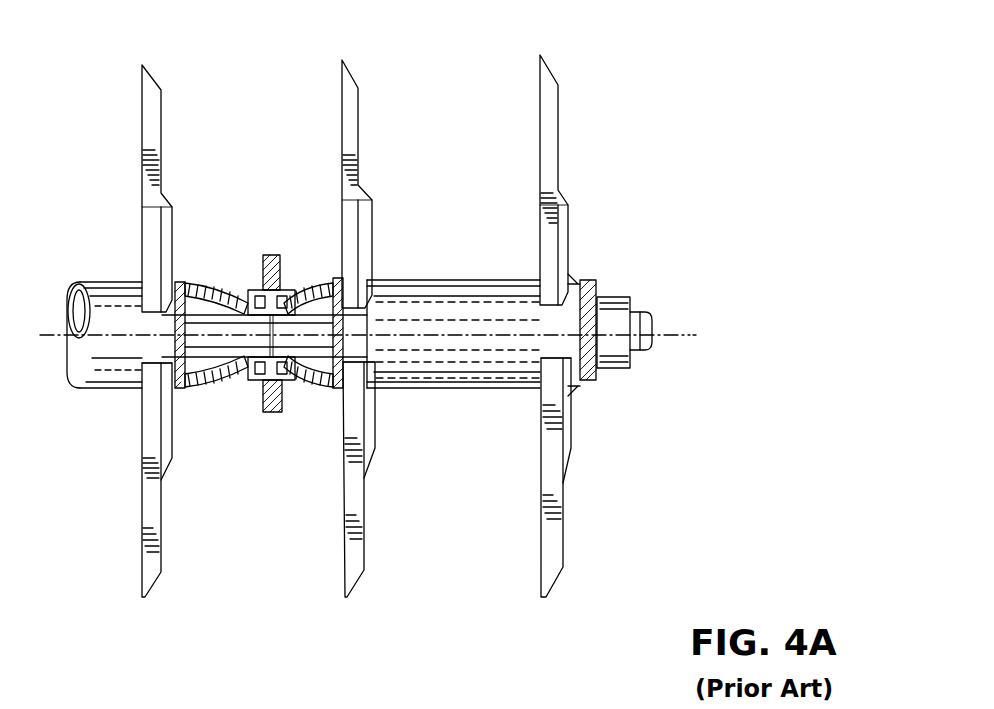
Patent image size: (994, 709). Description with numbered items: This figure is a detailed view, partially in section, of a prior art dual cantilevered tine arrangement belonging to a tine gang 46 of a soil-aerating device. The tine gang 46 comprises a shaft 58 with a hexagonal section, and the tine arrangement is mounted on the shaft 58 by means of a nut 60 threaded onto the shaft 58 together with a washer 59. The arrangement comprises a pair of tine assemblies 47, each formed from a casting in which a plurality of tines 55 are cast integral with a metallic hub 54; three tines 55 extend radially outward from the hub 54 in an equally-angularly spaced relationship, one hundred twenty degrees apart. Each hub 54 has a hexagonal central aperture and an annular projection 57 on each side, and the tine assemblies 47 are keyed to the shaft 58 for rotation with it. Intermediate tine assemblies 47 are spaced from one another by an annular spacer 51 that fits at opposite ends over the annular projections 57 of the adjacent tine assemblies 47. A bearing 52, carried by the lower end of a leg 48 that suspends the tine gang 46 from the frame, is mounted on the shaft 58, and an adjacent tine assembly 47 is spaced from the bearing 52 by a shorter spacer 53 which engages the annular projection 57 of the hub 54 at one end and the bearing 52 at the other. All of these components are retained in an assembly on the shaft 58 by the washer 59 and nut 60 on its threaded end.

The tine gang 46 is at (581, 184).
The tine assembly 47 is at (174, 510).
The leg 48 is at (266, 255).
The annular spacer 51 is at (95, 292).
The bearing 52 is at (249, 282).
The shorter spacer 53 is at (208, 288).
The hub 54 is at (140, 285).
The tine 55 is at (148, 122).
The annular projection 57 is at (182, 267).
The shaft 58 is at (645, 312).
The washer 59 is at (588, 282).
The nut 60 is at (618, 370).